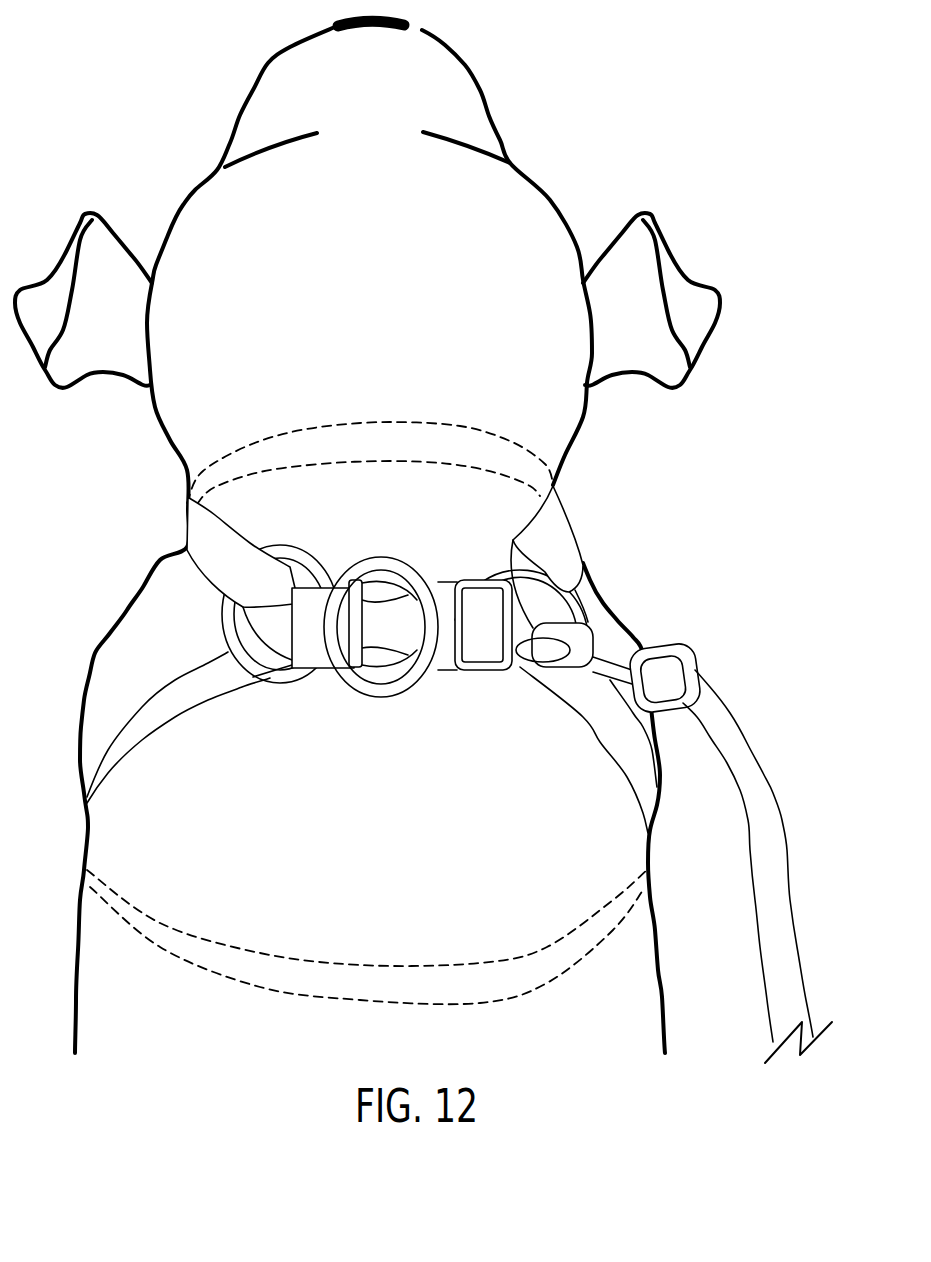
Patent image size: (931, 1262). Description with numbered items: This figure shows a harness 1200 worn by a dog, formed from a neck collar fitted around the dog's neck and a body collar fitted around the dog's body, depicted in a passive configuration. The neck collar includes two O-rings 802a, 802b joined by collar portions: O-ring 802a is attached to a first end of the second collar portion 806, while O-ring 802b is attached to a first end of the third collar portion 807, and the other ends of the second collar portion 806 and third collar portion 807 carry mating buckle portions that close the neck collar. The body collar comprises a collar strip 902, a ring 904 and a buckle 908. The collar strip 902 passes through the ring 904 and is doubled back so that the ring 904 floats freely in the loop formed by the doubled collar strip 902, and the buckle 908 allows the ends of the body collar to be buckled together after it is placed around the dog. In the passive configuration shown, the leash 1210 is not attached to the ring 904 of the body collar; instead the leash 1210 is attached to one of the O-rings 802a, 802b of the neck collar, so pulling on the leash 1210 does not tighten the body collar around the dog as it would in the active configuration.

The harness 1200 is at (683, 506).
The leash 1210 is at (759, 740).
The O-ring 802a is at (483, 542).
The O-ring 802b is at (223, 603).
The second collar portion 806 is at (567, 533).
The third collar portion 807 is at (185, 523).
The collar strip 902 is at (185, 667).
The ring 904 is at (368, 697).
The buckle 908 is at (433, 573).